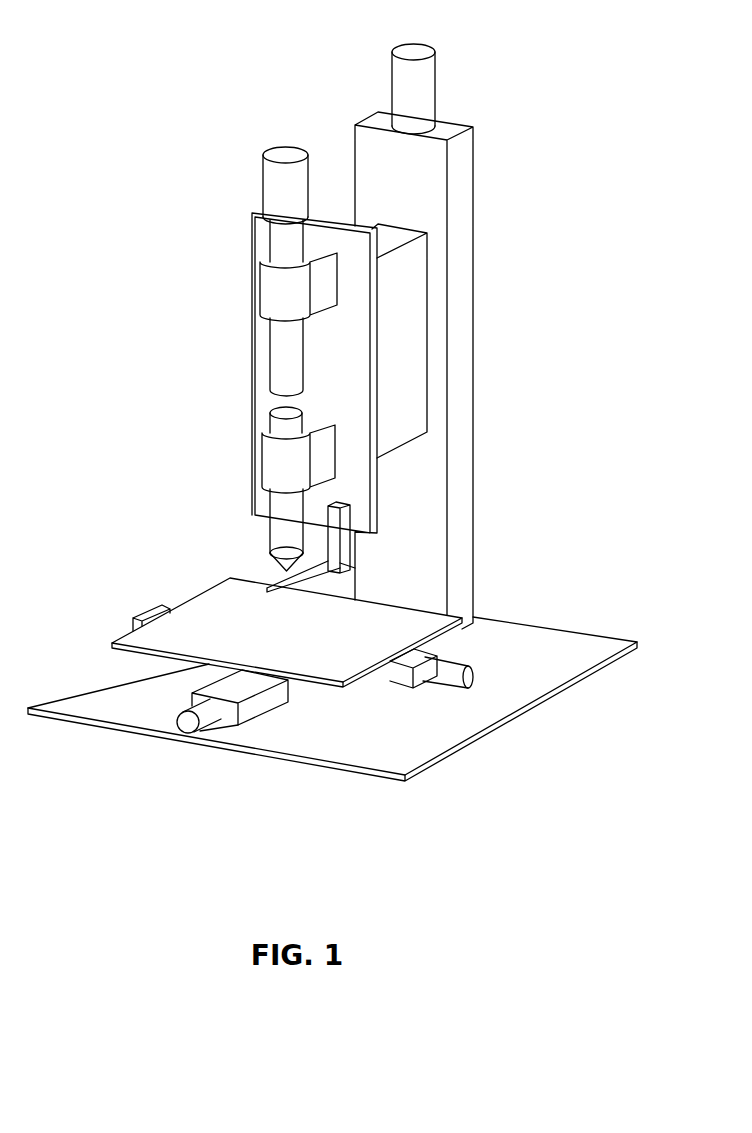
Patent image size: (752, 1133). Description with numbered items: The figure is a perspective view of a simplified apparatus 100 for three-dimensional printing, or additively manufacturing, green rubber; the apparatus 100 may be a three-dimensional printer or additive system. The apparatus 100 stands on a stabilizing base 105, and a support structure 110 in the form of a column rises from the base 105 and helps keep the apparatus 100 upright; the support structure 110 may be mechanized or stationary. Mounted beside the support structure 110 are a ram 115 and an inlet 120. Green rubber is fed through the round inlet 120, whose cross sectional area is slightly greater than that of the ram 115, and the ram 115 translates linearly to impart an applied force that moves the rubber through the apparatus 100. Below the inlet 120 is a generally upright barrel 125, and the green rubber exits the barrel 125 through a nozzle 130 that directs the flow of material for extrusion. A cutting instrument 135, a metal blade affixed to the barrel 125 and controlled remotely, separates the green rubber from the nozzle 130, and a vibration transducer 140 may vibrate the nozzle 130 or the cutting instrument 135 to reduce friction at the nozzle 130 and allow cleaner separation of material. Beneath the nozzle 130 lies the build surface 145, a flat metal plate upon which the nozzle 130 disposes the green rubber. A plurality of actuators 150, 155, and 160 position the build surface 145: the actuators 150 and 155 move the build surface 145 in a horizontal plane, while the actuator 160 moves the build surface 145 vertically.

The apparatus 100 is at (157, 52).
The base 105 is at (508, 700).
The support structure 110 is at (430, 70).
The ram 115 is at (275, 346).
The inlet 120 is at (267, 415).
The barrel 125 is at (270, 533).
The nozzle 130 is at (277, 565).
The cutting instrument 135 is at (357, 588).
The vibration transducer 140 is at (350, 548).
The build surface 145 is at (213, 617).
The actuator 150 is at (245, 713).
The actuator 155 is at (385, 672).
The actuator 160 is at (368, 112).